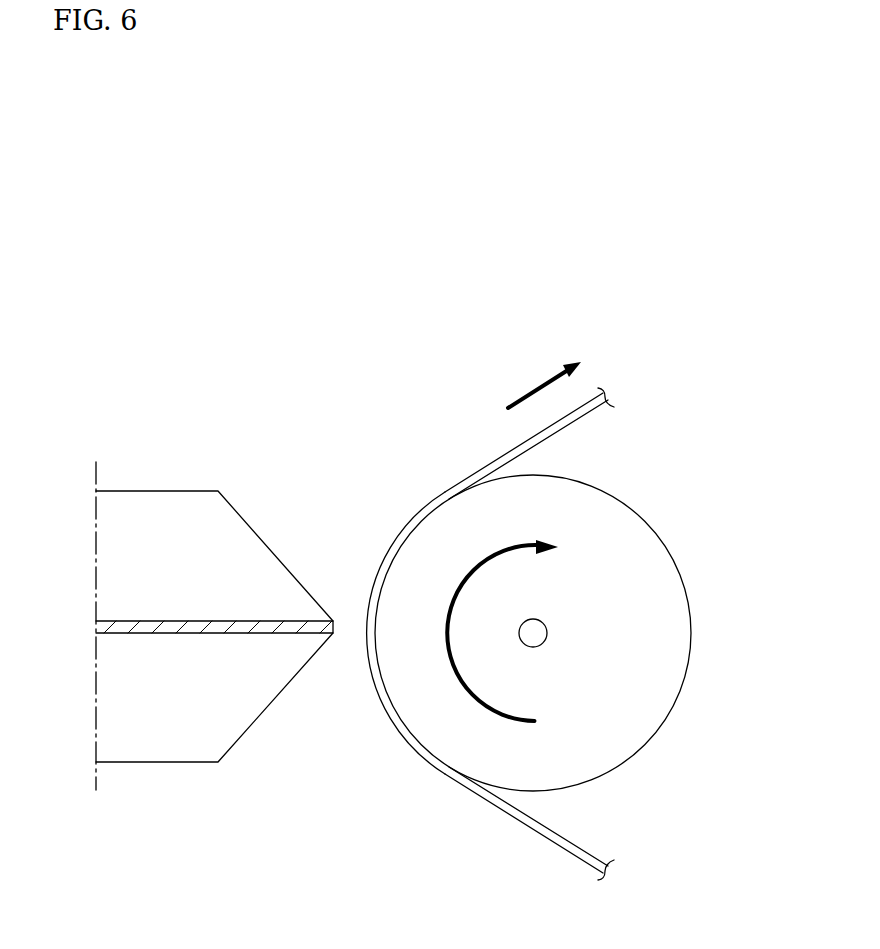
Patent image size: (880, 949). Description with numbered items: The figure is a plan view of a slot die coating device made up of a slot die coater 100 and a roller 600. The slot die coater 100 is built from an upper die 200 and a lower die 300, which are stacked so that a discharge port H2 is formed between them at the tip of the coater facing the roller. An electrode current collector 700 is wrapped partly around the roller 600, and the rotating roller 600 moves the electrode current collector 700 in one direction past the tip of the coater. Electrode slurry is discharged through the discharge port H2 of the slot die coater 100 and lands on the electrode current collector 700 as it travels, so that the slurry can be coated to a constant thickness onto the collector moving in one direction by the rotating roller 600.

The slot die coater 100 is at (222, 631).
The upper die 200 is at (183, 507).
The lower die 300 is at (183, 745).
The discharge port H2 is at (334, 621).
The roller 600 is at (647, 710).
The electrode current collector 700 is at (582, 415).